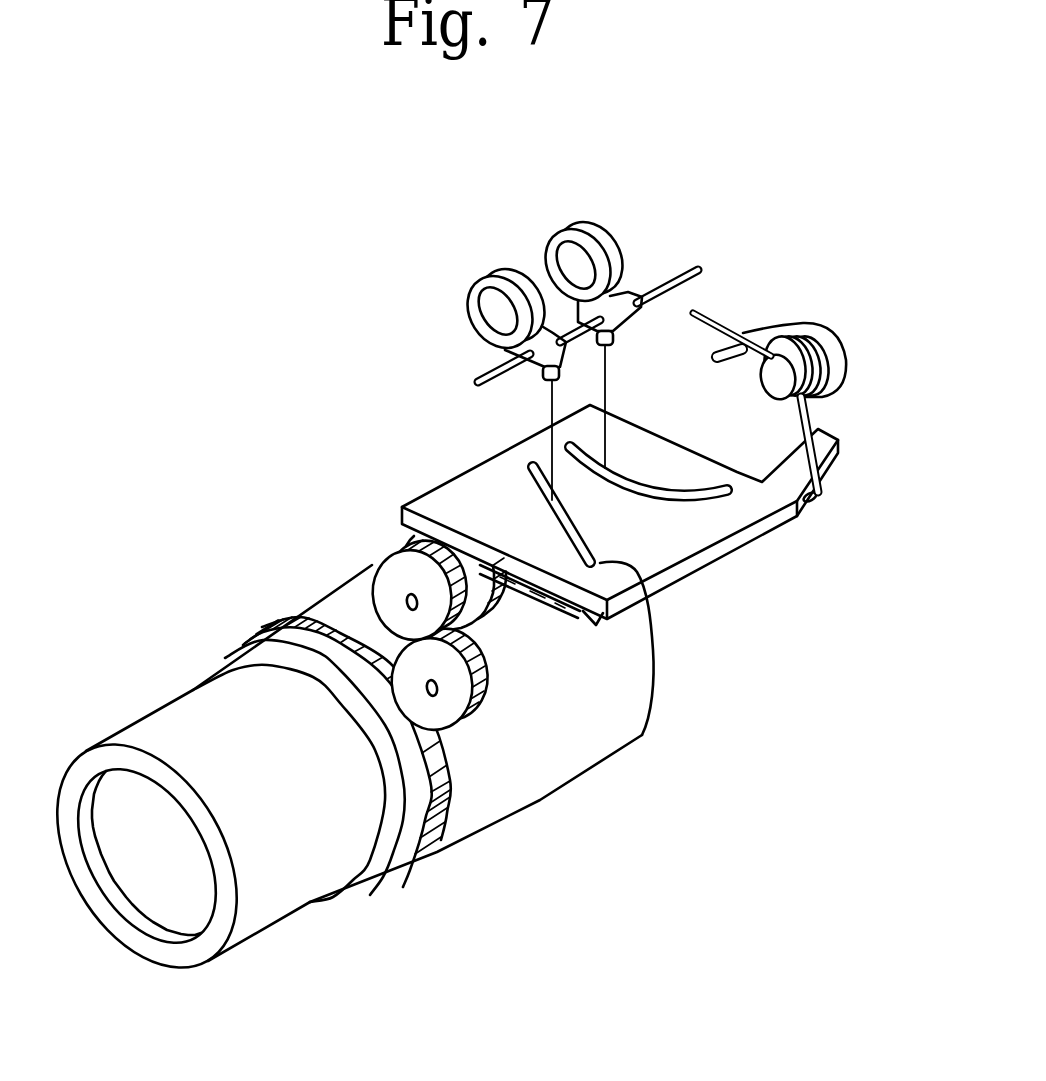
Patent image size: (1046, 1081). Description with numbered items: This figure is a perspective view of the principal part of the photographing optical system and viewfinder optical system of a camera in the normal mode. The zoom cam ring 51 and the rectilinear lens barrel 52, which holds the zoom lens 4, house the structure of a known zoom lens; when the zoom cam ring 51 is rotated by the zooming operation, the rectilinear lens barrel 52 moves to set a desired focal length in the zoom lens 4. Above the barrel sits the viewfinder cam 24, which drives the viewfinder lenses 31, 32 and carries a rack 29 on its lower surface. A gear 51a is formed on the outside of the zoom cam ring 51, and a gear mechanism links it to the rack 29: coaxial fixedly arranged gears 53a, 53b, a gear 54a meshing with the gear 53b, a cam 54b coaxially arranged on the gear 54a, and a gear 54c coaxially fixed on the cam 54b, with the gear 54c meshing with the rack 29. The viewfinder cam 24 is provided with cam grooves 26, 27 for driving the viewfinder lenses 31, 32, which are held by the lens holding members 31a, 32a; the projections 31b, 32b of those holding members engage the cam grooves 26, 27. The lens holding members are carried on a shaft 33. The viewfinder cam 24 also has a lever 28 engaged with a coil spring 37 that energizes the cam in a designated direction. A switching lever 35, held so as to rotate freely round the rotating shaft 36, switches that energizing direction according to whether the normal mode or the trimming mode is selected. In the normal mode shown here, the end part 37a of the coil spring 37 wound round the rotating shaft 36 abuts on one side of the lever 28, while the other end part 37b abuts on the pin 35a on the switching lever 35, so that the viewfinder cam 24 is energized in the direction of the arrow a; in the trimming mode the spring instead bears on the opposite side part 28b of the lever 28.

The zoom lens 4 is at (187, 908).
The viewfinder cam 24 is at (462, 493).
The cam groove 26 is at (635, 574).
The cam groove 27 is at (722, 500).
The lever 28 is at (843, 446).
The side part 28b is at (800, 475).
The rack 29 is at (577, 618).
The viewfinder lens 31 is at (500, 273).
The lens holding member 31a is at (493, 306).
The projection 31b is at (548, 380).
The viewfinder lens 32 is at (572, 226).
The lens holding member 32a is at (600, 246).
The projection 32b is at (612, 340).
The shaft 33 is at (702, 268).
The switching lever 35 is at (818, 325).
The pin 35a is at (714, 356).
The rotating shaft 36 is at (774, 382).
The coil spring 37 is at (846, 357).
The end part 37a is at (822, 492).
The end part 37b is at (712, 320).
The zoom cam ring 51 is at (493, 807).
The gear 51a is at (433, 853).
The rectilinear lens barrel 52 is at (310, 888).
The gear 53a is at (480, 720).
The gear 53b is at (490, 673).
The gear 54a is at (400, 572).
The cam 54b is at (410, 540).
The gear 54c is at (508, 588).
The arrow a is at (787, 566).